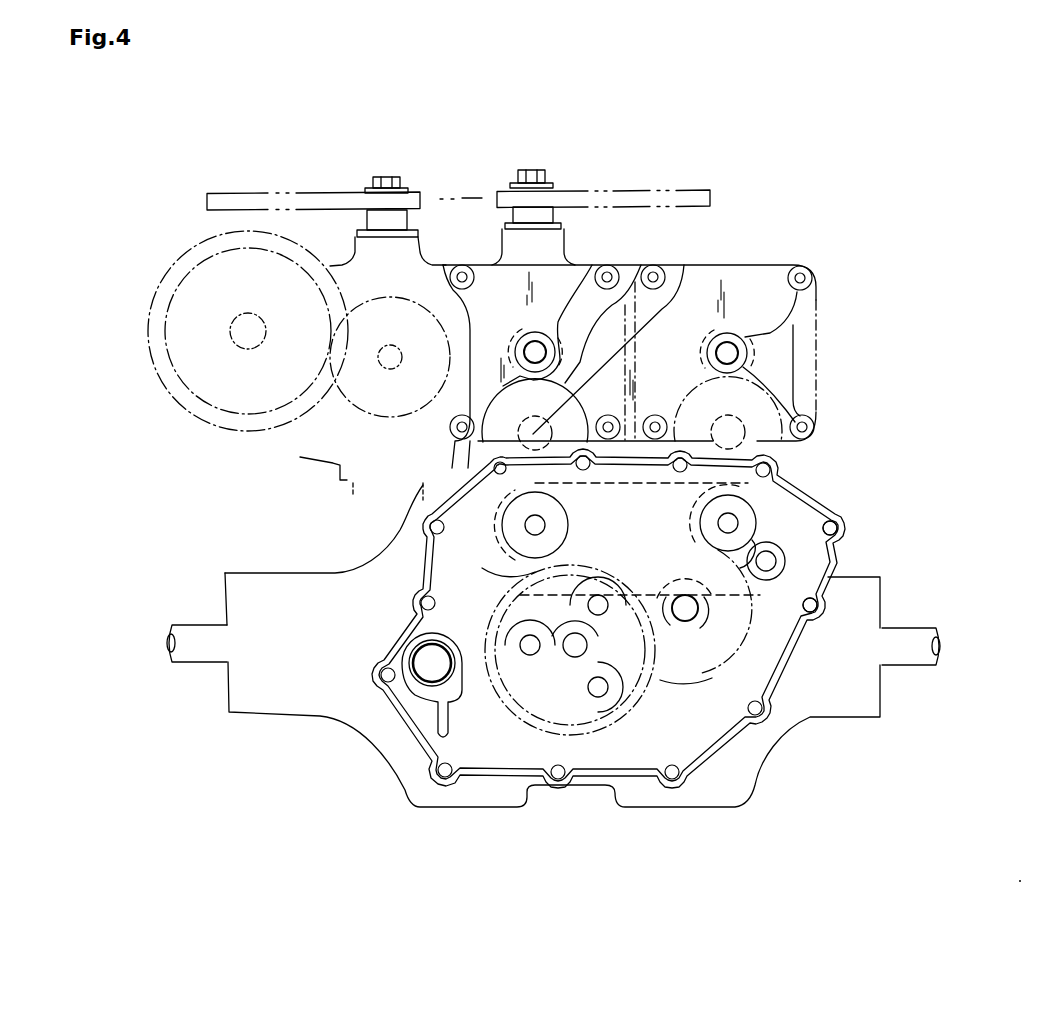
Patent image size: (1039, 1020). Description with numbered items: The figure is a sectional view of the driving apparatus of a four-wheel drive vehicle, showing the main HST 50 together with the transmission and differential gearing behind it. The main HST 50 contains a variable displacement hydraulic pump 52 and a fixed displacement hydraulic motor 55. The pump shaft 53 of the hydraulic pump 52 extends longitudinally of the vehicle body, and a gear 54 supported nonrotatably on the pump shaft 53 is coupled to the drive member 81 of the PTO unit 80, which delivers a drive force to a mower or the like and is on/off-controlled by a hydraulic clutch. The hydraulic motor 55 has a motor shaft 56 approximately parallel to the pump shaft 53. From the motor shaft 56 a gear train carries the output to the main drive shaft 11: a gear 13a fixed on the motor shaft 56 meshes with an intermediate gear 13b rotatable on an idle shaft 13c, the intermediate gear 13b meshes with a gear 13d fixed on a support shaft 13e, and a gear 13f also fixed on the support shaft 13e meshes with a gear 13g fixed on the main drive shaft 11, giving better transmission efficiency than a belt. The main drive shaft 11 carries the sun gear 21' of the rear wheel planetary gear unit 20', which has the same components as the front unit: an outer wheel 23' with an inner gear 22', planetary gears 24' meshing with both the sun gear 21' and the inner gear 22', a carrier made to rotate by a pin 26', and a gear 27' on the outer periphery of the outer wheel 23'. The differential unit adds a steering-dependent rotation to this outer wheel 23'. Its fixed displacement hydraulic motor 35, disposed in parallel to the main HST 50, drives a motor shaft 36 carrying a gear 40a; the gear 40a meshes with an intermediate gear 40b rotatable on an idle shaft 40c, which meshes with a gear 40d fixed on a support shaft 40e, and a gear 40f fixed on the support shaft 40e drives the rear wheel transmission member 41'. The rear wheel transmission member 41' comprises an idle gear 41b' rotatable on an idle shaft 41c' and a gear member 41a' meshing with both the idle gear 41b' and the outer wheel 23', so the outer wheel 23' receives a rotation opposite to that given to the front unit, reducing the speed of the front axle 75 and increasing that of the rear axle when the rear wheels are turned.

The main drive shaft 11 is at (517, 668).
The gear 13a is at (592, 265).
The intermediate gear 13b is at (641, 265).
The idle shaft 13c is at (684, 265).
The gear 13d is at (478, 475).
The support shaft 13e is at (530, 485).
The gear 13f is at (533, 525).
The gear 13g is at (482, 568).
The rear wheel planetary gear unit 20' is at (556, 666).
The sun gear 21' is at (525, 734).
The gear 22' is at (570, 706).
The outer wheel 23' is at (577, 711).
The planetary gears 24' is at (573, 755).
The shaft 26' is at (541, 734).
The gear 27' is at (625, 712).
The hydraulic motor 35 is at (752, 254).
The motor shaft 36 is at (728, 343).
The gear 40a is at (752, 339).
The intermediate gear 40b is at (767, 388).
The idle shaft 40c is at (730, 431).
The gear 40d is at (732, 521).
The support shaft 40e is at (770, 550).
The gear 40f is at (745, 556).
The rear wheel transmission member 41' is at (628, 621).
The gear member 41a' is at (817, 617).
The idle gear 41b' is at (886, 518).
The idle shaft 41c' is at (845, 574).
The main HST 50 is at (465, 118).
The hydraulic pump 52 is at (421, 245).
The pump shaft 53 is at (386, 354).
The gear 54 is at (414, 284).
The hydraulic motor 55 is at (492, 258).
The motor shaft 56 is at (535, 332).
The front axle 75 is at (200, 660).
The PTO unit 80 is at (166, 234).
The drive member 81 is at (168, 302).